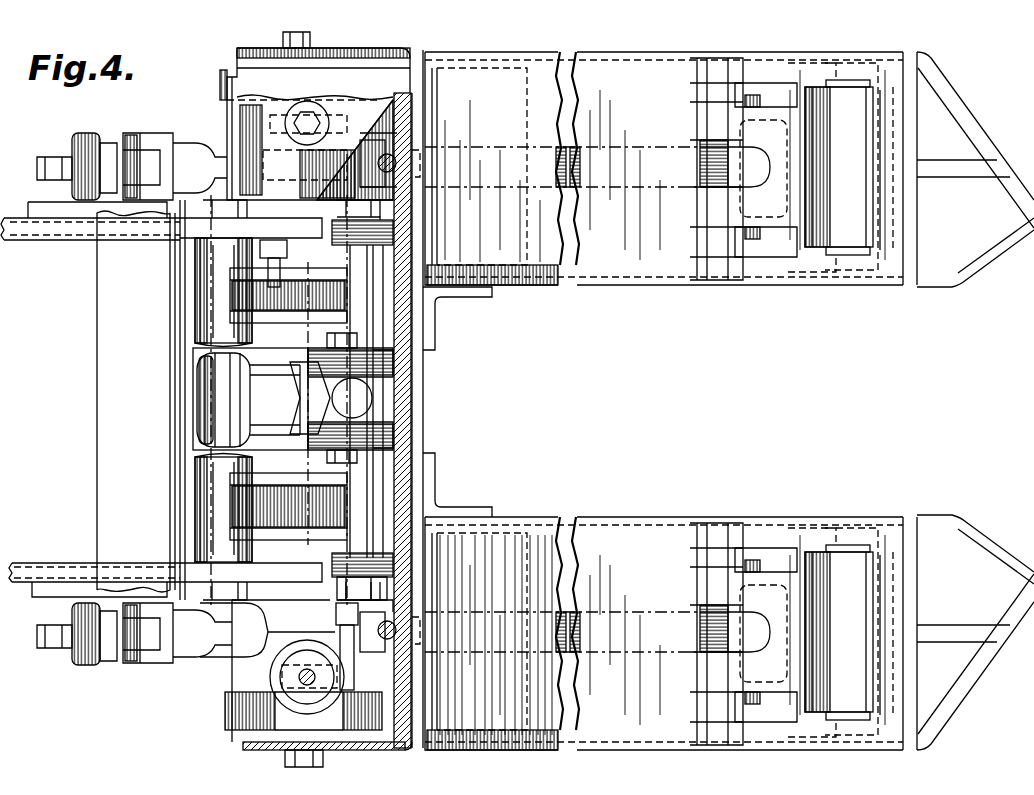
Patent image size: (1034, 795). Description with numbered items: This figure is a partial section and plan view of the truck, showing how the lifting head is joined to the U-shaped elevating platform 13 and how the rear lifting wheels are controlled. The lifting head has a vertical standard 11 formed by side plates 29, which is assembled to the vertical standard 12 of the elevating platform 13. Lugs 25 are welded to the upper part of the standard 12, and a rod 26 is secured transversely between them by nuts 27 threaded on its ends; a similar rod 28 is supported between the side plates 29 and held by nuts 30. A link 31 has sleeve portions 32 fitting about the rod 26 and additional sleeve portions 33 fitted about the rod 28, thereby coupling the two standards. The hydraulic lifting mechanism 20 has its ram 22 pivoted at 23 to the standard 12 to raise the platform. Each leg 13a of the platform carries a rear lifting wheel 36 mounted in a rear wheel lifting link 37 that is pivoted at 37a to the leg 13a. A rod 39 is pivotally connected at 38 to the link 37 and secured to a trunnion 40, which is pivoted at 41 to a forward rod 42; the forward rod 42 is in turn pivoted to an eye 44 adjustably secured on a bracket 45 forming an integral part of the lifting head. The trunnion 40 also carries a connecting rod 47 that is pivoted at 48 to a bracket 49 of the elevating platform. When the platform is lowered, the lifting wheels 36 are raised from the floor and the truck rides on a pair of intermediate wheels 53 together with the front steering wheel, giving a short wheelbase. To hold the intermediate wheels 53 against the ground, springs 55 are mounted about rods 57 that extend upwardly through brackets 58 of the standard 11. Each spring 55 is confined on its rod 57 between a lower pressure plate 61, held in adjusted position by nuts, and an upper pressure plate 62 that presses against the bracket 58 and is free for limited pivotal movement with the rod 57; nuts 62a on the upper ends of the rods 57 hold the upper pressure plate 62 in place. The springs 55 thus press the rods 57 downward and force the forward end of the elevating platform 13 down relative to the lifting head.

The vertical standard 11 is at (254, 216).
The vertical standard 12 is at (412, 390).
The elevating platform 13 is at (645, 290).
The leg 13a is at (606, 265).
The hydraulic lifting mechanism 20 is at (240, 395).
The ram 22 is at (357, 400).
The pivot 23 is at (345, 460).
The lugs 25 is at (437, 240).
The rod 26 is at (372, 486).
The nuts 27 is at (372, 230).
The rod 28 is at (195, 324).
The side plates 29 is at (63, 241).
The nuts 30 is at (172, 214).
The link 31 is at (281, 327).
The sleeve portions 32 is at (332, 292).
The sleeve portions 33 is at (200, 300).
The rear lifting wheels 36 is at (825, 240).
The rear wheel lifting link 37 is at (775, 260).
The pivot 37a is at (725, 275).
The pivot 38 is at (700, 130).
The rod 39 is at (690, 188).
The trunnion 40 is at (420, 165).
The pivot 41 is at (262, 160).
The forward rod 42 is at (198, 147).
The eye 44 is at (140, 150).
The bracket 45 is at (88, 134).
The connecting rod 47 is at (390, 198).
The pivot 48 is at (348, 620).
The bracket 49 is at (393, 153).
The intermediate wheels 53 is at (222, 72).
The springs 55 is at (290, 690).
The rod 57 is at (310, 120).
The bracket 58 is at (222, 102).
The lower pressure plate 61 is at (287, 707).
The upper pressure plate 62 is at (292, 110).
The nuts 62a is at (308, 118).